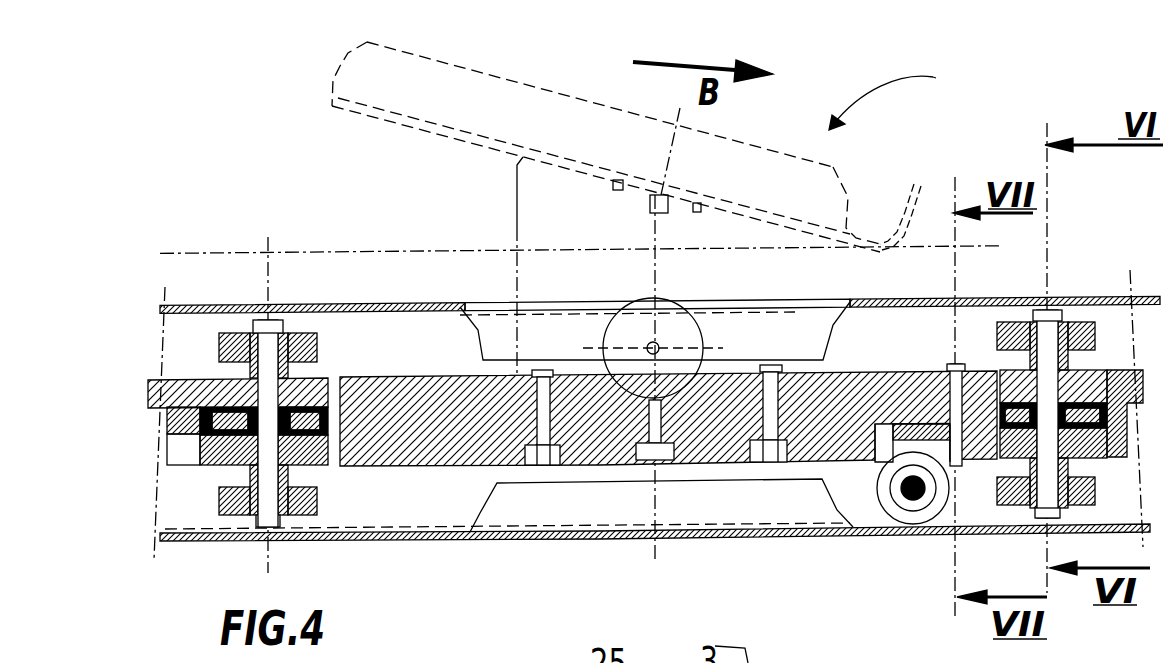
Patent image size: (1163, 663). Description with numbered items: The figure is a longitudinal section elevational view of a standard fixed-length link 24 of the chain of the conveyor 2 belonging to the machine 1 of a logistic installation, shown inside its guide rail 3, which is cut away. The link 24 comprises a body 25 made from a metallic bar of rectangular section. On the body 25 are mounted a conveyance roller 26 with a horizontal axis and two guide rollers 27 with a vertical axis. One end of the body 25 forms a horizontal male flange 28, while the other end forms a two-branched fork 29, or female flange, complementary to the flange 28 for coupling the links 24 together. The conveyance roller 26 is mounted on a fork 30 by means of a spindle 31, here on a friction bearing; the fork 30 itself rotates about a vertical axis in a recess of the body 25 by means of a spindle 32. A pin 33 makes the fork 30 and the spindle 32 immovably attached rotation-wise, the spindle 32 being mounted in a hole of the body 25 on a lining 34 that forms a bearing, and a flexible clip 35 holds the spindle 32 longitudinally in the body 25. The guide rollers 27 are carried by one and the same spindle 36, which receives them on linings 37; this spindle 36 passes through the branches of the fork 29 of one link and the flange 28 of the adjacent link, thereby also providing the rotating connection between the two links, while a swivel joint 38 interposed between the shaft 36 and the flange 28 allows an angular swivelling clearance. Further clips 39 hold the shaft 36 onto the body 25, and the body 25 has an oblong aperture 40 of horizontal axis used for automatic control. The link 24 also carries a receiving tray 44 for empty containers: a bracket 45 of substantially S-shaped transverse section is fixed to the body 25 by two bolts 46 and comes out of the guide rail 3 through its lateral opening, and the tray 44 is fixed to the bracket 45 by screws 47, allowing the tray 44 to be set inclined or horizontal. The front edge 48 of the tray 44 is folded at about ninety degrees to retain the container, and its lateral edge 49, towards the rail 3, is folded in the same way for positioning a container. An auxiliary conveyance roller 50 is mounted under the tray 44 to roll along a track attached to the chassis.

The machine 1 is at (902, 98).
The conveyor 2 is at (964, 89).
The guide rail 3 is at (405, 541).
The link 24 is at (450, 495).
The body 25 is at (493, 433).
The conveyance roller 26 is at (907, 500).
The guide rollers 27 is at (307, 337).
The male flange 28 is at (163, 410).
The fork 29 is at (323, 367).
The fork 30 is at (947, 470).
The spindle 31 is at (910, 497).
The spindle 32 is at (955, 365).
The pin 33 is at (957, 473).
The lining 34 is at (940, 380).
The clip 35 is at (977, 373).
The spindle 36 is at (272, 522).
The linings 37 is at (217, 352).
The swivel joint 38 is at (200, 462).
The clips 39 is at (250, 313).
The oblong aperture 40 is at (663, 470).
The receiving tray 44 is at (330, 66).
The bracket 45 is at (513, 207).
The bolts 46 is at (760, 470).
The screws 47 is at (668, 185).
The front edge 48 is at (917, 187).
The lateral edge 49 is at (500, 78).
The auxiliary conveyance roller 50 is at (675, 333).